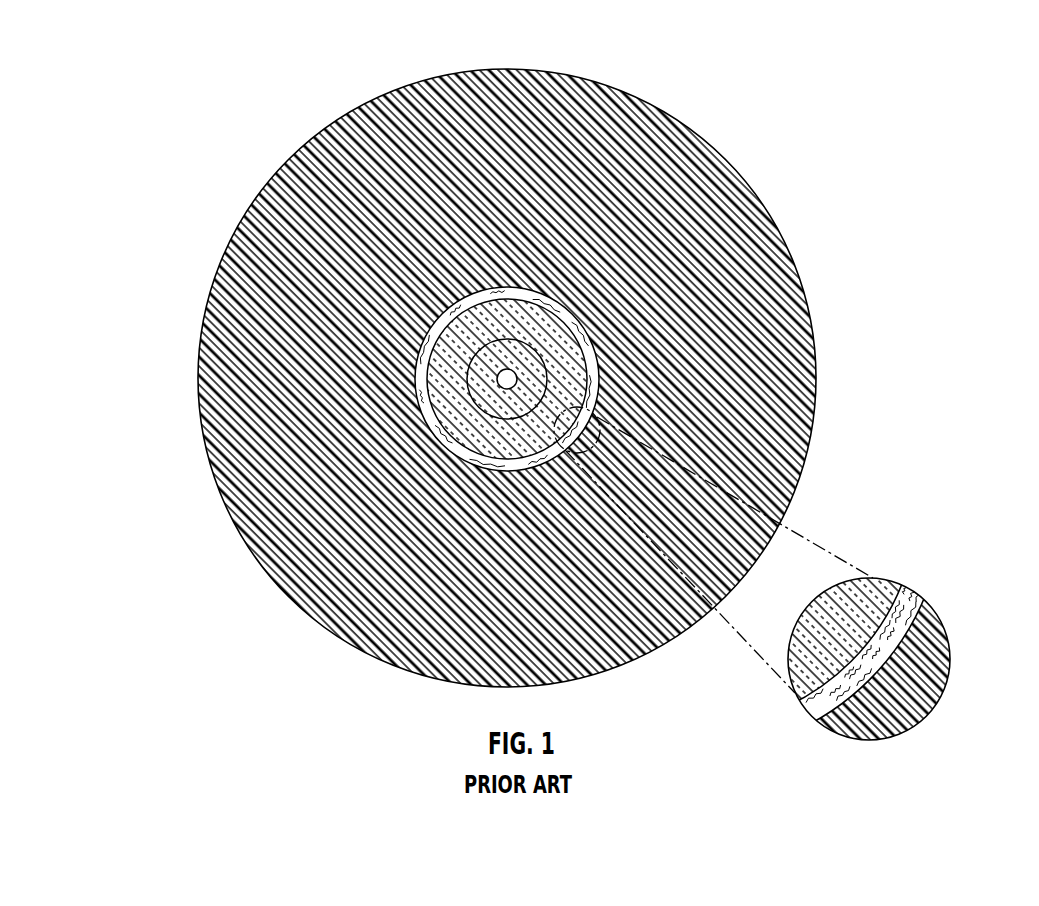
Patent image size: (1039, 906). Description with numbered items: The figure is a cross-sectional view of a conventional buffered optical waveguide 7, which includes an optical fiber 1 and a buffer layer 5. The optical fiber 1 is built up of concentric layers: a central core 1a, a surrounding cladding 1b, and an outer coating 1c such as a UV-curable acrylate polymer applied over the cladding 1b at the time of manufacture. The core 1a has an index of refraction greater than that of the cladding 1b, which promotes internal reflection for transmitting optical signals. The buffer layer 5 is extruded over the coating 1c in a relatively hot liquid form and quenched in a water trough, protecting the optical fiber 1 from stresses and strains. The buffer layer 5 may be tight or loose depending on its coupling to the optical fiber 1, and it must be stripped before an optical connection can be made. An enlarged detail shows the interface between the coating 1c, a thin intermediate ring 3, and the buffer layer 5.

The conventional buffered optical waveguide 7 is at (255, 118).
The buffer layer 5 is at (628, 132).
The coating layer 3 is at (598, 372).
The optical fiber 1 is at (483, 437).
The core 1a is at (507, 379).
The cladding 1b is at (490, 413).
The coating 1c is at (562, 352).